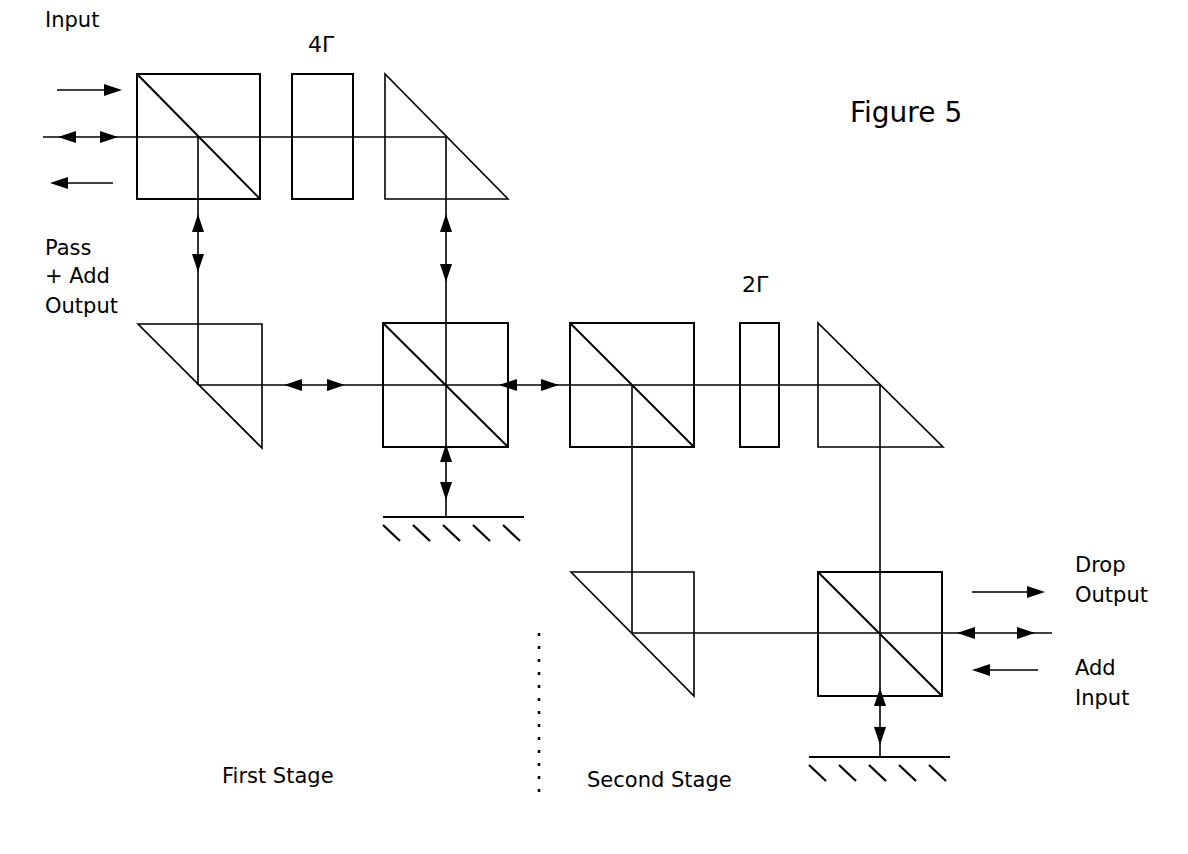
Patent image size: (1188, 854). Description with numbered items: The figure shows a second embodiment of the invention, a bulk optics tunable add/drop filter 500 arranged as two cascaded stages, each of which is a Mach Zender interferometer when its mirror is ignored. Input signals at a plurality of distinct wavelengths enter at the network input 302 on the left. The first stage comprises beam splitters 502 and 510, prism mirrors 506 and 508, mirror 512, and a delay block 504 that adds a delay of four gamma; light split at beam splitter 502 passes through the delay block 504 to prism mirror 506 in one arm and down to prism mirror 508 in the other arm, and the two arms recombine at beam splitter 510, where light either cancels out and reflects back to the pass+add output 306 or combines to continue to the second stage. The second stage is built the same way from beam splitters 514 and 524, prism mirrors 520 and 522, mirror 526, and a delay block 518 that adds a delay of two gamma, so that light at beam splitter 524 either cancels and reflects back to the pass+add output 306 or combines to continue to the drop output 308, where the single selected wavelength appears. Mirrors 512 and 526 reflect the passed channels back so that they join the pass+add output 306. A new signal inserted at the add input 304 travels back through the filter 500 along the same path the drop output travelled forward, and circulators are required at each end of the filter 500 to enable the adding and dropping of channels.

The bulk optics tunable add/drop filter 500 is at (400, 638).
The network input 302 is at (89, 76).
The pass+add output 306 is at (81, 202).
The drop output port 308 is at (1008, 575).
The add input port 304 is at (1005, 693).
The beam splitter 502 is at (198, 122).
The delay block 504 is at (322, 158).
The prism mirror 506 is at (446, 136).
The prism mirror 508 is at (196, 386).
The beam splitter 510 is at (452, 369).
The mirror 512 is at (453, 550).
The beam splitter 514 is at (632, 369).
The delay block 518 is at (756, 405).
The prism mirror 520 is at (880, 385).
The prism mirror 522 is at (639, 618).
The beam splitter 524 is at (866, 621).
The mirror 526 is at (879, 786).